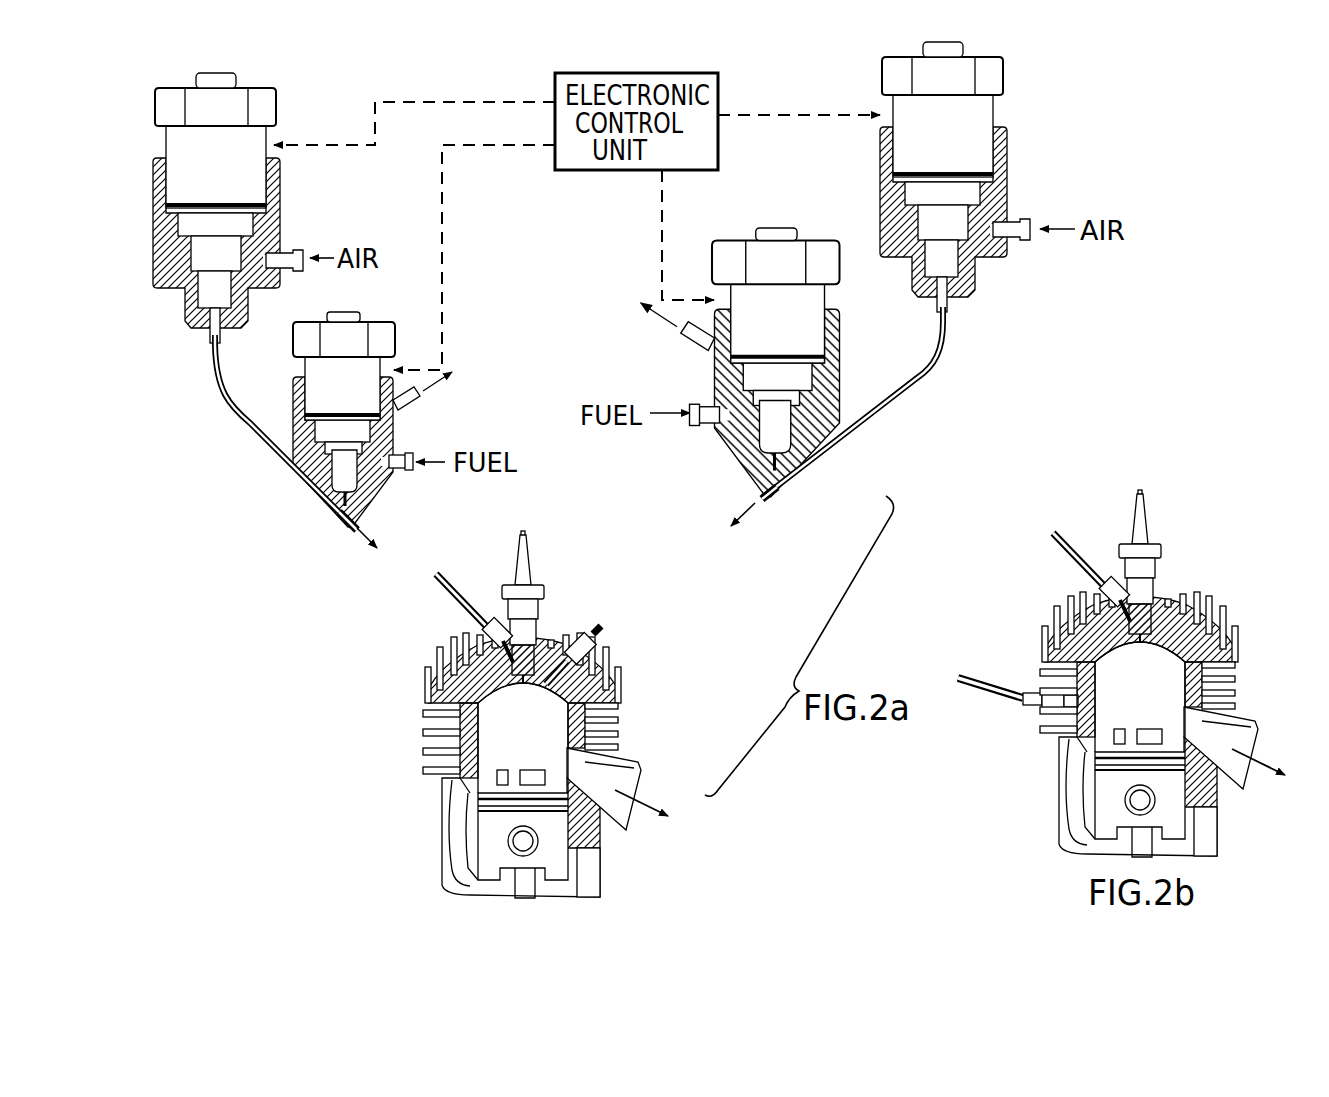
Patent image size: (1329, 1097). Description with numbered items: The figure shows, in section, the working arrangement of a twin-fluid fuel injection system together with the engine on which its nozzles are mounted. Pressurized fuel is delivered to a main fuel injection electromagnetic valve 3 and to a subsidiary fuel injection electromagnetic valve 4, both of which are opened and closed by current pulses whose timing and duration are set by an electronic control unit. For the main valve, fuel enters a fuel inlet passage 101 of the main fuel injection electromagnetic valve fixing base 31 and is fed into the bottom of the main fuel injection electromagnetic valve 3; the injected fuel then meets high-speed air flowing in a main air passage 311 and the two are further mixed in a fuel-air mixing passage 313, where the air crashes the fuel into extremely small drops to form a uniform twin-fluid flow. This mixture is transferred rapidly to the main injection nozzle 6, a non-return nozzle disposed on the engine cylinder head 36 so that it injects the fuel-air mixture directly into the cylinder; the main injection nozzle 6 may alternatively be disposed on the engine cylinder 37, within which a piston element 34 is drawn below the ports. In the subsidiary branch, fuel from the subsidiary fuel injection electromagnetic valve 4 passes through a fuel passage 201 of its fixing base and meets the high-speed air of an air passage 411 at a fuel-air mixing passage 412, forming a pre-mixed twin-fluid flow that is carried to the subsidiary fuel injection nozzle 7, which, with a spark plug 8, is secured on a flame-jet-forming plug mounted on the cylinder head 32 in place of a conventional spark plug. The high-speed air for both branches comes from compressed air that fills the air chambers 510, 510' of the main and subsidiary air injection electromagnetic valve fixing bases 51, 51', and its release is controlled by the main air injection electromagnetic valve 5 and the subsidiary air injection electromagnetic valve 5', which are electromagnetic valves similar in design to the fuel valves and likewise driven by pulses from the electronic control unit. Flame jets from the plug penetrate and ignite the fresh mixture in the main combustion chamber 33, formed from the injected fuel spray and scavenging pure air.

In FIG. 2A, the main fuel injection electromagnetic valve 3 is at (733, 302).
In FIG. 2A, the main fuel injection electromagnetic valve fixing base 31 is at (717, 378).
In FIG. 2A, the fuel inlet passage 101 is at (693, 427).
In FIG. 2A, the main air passage 311 is at (840, 426).
In FIG. 2A, the fuel-air mixing passage 313 is at (768, 501).
In FIG. 2A, the subsidiary fuel injection electromagnetic valve 4 is at (373, 368).
In FIG. 2A, the air passage 411 is at (300, 472).
In FIG. 2A, the fuel-air mixing passage 412 is at (351, 531).
In FIG. 2A, the fuel passage 201 is at (412, 470).
In FIG. 2A, the main air injection electromagnetic valve 5 is at (921, 109).
In FIG. 2A, the main air injection electromagnetic valve fixing base 51 is at (923, 208).
In FIG. 2A, the air chamber 510 is at (901, 244).
In FIG. 2A, the subsidiary air injection electromagnetic valve 5' is at (236, 140).
In FIG. 2A, the subsidiary air injection electromagnetic valve fixing base 51' is at (251, 243).
In FIG. 2A, the air chamber 510' is at (260, 269).
In FIG. 2B, the main injection nozzle 6 is at (1018, 679).
In FIG. 2B, the subsidiary fuel injection nozzle 7 is at (1091, 565).
In FIG. 2A, the spark plug 8 is at (537, 603).
In FIG. 2B, the spark plug 8 is at (1170, 566).
In FIG. 2A, the cylinder head 32 is at (615, 662).
In FIG. 2B, the cylinder head 32 is at (1164, 614).
In FIG. 2A, the combustion chamber 33 is at (500, 690).
In FIG. 2B, the combustion chamber 33 is at (1086, 620).
In FIG. 2A, the piston 34 is at (562, 817).
In FIG. 2B, the piston 34 is at (1188, 807).
In FIG. 2A, the scavenging port 36 is at (483, 785).
In FIG. 2B, the scavenging port 36 is at (1102, 796).
In FIG. 2A, the engine cylinder 37 is at (596, 733).
In FIG. 2B, the engine cylinder 37 is at (1176, 734).